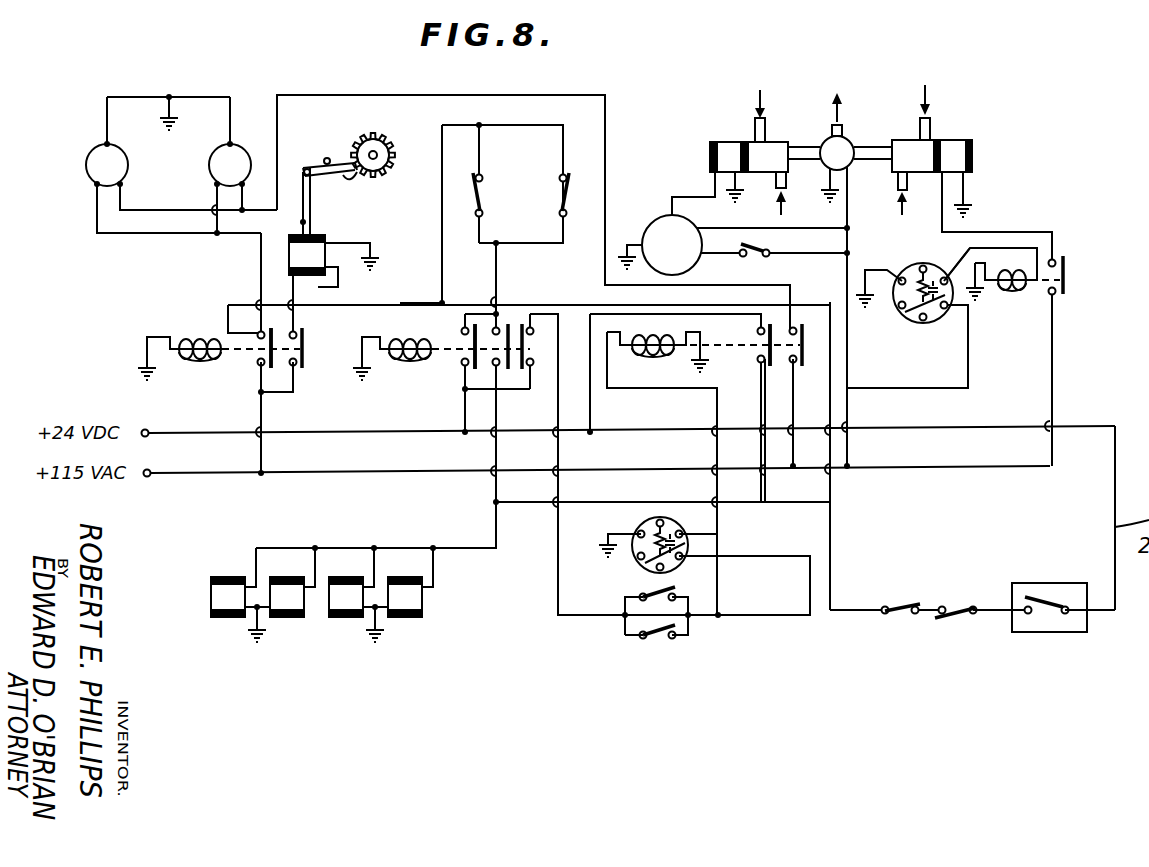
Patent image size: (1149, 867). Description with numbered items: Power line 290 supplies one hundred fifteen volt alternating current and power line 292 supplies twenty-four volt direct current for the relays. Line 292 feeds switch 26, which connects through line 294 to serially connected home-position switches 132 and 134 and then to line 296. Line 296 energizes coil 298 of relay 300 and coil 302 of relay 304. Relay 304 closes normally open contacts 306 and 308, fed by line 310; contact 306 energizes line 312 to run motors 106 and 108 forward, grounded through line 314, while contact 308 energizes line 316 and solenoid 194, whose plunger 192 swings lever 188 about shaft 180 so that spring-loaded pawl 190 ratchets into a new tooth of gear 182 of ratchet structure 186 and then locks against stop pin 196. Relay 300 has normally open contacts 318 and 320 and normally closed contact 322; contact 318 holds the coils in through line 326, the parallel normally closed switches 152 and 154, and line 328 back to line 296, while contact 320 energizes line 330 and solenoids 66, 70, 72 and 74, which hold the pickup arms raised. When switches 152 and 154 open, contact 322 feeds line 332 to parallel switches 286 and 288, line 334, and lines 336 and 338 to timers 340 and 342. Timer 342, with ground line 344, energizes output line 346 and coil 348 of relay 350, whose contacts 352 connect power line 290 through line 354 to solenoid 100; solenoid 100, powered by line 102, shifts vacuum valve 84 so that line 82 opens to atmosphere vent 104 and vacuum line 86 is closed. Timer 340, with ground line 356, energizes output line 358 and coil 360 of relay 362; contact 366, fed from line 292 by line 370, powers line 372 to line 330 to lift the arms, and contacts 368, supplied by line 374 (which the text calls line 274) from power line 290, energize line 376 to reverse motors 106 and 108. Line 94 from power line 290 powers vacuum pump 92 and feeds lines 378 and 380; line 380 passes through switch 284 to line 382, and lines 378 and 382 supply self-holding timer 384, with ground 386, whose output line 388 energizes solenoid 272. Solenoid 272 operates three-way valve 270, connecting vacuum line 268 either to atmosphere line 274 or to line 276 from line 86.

The switch 26 is at (1043, 595).
The solenoid 66 is at (220, 620).
The solenoid 70 is at (296, 622).
The solenoid 72 is at (356, 622).
The solenoid 74 is at (410, 618).
The line 82 is at (898, 187).
The vacuum valve 84 is at (935, 140).
The vacuum line 86 is at (866, 148).
The vacuum pump 92 is at (847, 140).
The electric line 94 is at (850, 270).
The solenoid 100 is at (950, 155).
The line 102 is at (940, 207).
The atmosphere vent 104 is at (920, 123).
The motor 106 is at (86, 162).
The motor 108 is at (209, 162).
The switch 132 is at (893, 605).
The switch 134 is at (970, 605).
The switch 152 is at (483, 195).
The switch 154 is at (561, 203).
The shaft 180 is at (382, 155).
The gear 182 is at (385, 140).
The ratchet structure 186 is at (376, 126).
The lever 188 is at (322, 180).
The pawl 190 is at (332, 158).
The plunger 192 is at (306, 222).
The solenoid 194 is at (289, 255).
The stop pin 196 is at (340, 178).
The vacuum line 268 is at (799, 206).
The valve 270 is at (777, 180).
The solenoid 272 is at (712, 150).
The line 274 is at (755, 128).
The line 276 is at (817, 145).
The switch 284 is at (763, 248).
The switch 286 is at (655, 590).
The switch 288 is at (648, 640).
The power line 290 is at (194, 483).
The power line 292 is at (184, 432).
The line 294 is at (997, 613).
The line 296 is at (400, 303).
The coil 298 is at (411, 364).
The relay 300 is at (455, 366).
The coil 302 is at (207, 361).
The relay 304 is at (260, 370).
The contact 306 is at (254, 339).
The contact 308 is at (306, 338).
The line 310 is at (262, 415).
The line 312 is at (261, 285).
The line 314 is at (209, 97).
The line 316 is at (318, 288).
The contact 318 is at (465, 340).
The contact 320 is at (510, 308).
The contact 322 is at (525, 371).
The line 326 is at (498, 283).
The line 328 is at (442, 222).
The line 330 is at (496, 518).
The line 332 is at (558, 562).
The line 334 is at (711, 615).
The line 336 is at (720, 567).
The line 338 is at (810, 588).
The timer 340 is at (690, 540).
The timer 342 is at (920, 325).
The ground line 344 is at (878, 278).
The output line 346 is at (950, 272).
The coil 348 is at (1010, 292).
The relay 350 is at (1064, 293).
The contacts 352 is at (1068, 270).
The line 354 is at (1031, 229).
The ground line 356 is at (620, 534).
The output line 358 is at (668, 398).
The coil 360 is at (658, 360).
The relay 362 is at (746, 355).
The contact 366 is at (760, 338).
The contacts 368 is at (840, 318).
The line 370 is at (592, 413).
The line 372 is at (670, 502).
The conductor 374 is at (795, 390).
The line 376 is at (605, 120).
The line 378 is at (732, 227).
The line 380 is at (819, 252).
The line 382 is at (718, 256).
The timer 384 is at (654, 214).
The ground 386 is at (628, 243).
The output line 388 is at (695, 193).